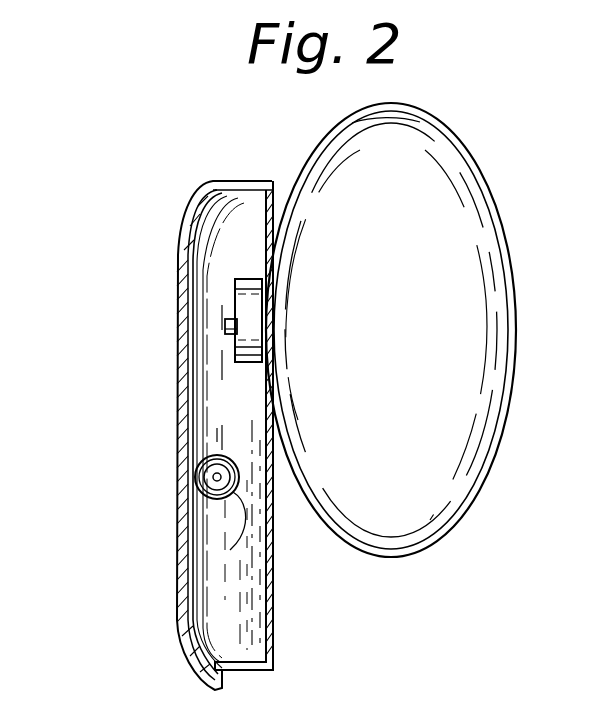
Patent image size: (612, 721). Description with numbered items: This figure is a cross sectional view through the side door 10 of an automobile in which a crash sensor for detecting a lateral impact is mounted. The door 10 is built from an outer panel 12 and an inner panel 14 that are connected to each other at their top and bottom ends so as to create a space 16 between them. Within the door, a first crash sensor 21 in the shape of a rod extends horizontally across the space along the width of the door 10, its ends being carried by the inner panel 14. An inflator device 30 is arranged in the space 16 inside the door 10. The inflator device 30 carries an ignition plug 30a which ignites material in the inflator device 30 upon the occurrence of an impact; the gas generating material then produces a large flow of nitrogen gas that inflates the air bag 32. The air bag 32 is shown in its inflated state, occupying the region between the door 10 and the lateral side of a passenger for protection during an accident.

The side door 10 is at (153, 355).
The outer panel 12 is at (179, 543).
The inner panel 14 is at (276, 565).
The space 16 is at (250, 414).
The first crash sensor 21 is at (245, 503).
The inflator device 30 is at (236, 292).
The ignition plug 30a is at (222, 335).
The air bag 32 is at (478, 492).